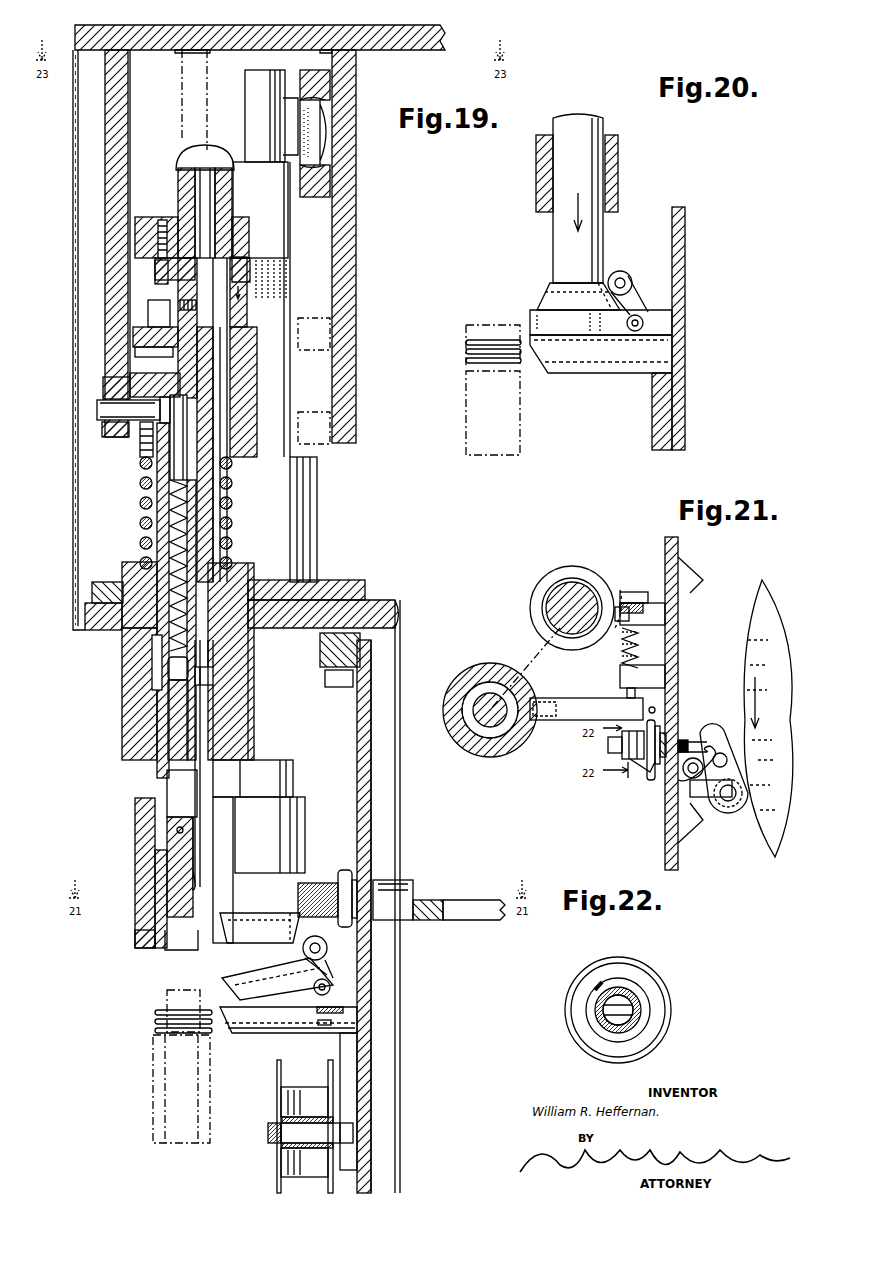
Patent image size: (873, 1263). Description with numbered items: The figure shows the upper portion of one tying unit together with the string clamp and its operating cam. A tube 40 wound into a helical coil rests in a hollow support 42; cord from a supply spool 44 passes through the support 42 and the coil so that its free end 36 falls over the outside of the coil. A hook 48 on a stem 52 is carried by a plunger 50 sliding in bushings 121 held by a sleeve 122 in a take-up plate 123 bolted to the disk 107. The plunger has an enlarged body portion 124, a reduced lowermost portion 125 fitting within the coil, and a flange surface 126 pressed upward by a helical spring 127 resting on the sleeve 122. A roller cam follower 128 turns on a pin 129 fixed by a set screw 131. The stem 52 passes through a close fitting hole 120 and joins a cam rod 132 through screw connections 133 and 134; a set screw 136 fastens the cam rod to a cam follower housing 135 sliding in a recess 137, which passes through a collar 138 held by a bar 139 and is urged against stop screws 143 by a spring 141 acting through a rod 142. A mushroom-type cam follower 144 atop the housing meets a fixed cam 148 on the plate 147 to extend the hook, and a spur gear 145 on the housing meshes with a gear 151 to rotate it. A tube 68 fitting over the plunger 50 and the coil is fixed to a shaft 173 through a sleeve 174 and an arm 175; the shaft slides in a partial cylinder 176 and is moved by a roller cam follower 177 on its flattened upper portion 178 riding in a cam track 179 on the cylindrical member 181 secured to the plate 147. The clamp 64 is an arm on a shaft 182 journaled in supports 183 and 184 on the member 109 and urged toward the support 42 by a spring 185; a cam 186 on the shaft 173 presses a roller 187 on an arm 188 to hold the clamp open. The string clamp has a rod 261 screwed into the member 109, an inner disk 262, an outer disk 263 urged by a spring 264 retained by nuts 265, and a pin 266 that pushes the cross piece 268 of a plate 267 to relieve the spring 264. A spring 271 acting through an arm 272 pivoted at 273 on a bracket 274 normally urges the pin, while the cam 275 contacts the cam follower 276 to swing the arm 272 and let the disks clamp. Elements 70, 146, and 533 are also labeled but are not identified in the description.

In FIG. 19, the free end of the cord 36 is at (220, 1092).
In FIG. 19, the tube formed into helical coil 40 is at (153, 1012).
In FIG. 20, the tube formed into helical coil 40 is at (461, 343).
In FIG. 21, the tube formed into helical coil 40 is at (490, 735).
In FIG. 19, the hollow support 42 is at (252, 1034).
In FIG. 20, the hollow support 42 is at (582, 373).
In FIG. 19, the supply spool 44 is at (278, 1162).
In FIG. 19, the hook 48 is at (165, 945).
In FIG. 19, the hook plunger 50 is at (168, 713).
In FIG. 19, the stem 52 is at (185, 774).
In FIG. 19, the clamp 64 is at (272, 986).
In FIG. 20, the clamp 64 is at (530, 320).
In FIG. 19, the tube 68 is at (135, 932).
In FIG. 21, the tube 68 is at (460, 735).
In FIG. 19, the guide 70 is at (233, 896).
In FIG. 19, the disk 107 is at (393, 595).
In FIG. 19, the member 109 is at (365, 668).
In FIG. 20, the member 109 is at (668, 328).
In FIG. 21, the member 109 is at (665, 822).
In FIG. 19, the close fitting hole 120 is at (188, 843).
In FIG. 19, the bushings 121 is at (152, 688).
In FIG. 19, the sleeve 122 is at (230, 575).
In FIG. 19, the take-up plate 123 is at (345, 580).
In FIG. 19, the body portion 124 is at (268, 320).
In FIG. 19, the lowermost portion 125 is at (175, 905).
In FIG. 21, the lowermost portion 125 is at (498, 700).
In FIG. 19, the flange surface 126 is at (243, 458).
In FIG. 19, the helical spring 127 is at (140, 504).
In FIG. 19, the roller cam follower 128 is at (103, 390).
In FIG. 19, the pin 129 is at (100, 410).
In FIG. 19, the set screw 131 is at (140, 440).
In FIG. 19, the cam rod 132 is at (215, 425).
In FIG. 19, the screw connection 133 is at (213, 668).
In FIG. 19, the screw connection 134 is at (208, 640).
In FIG. 19, the cam follower housing 135 is at (178, 365).
In FIG. 19, the set screw 136 is at (180, 305).
In FIG. 19, the recess 137 is at (213, 395).
In FIG. 19, the collar 138 is at (238, 215).
In FIG. 19, the bar 139 is at (140, 265).
In FIG. 19, the spring 141 is at (168, 528).
In FIG. 19, the rod 142 is at (172, 470).
In FIG. 19, the stop screws 143 is at (168, 207).
In FIG. 19, the mushroom-type cam follower 144 is at (182, 150).
In FIG. 19, the spur gear 145 is at (250, 258).
In FIG. 19, the side wall 146 is at (128, 132).
In FIG. 19, the plate 147 is at (133, 56).
In FIG. 19, the fixed cam 148 is at (182, 97).
In FIG. 19, the gear 151 is at (237, 310).
In FIG. 19, the shaft 173 is at (265, 785).
In FIG. 20, the shaft 173 is at (562, 122).
In FIG. 21, the shaft 173 is at (572, 590).
In FIG. 19, the sleeve 174 is at (283, 812).
In FIG. 20, the sleeve 174 is at (536, 168).
In FIG. 21, the arm 175 is at (515, 650).
In FIG. 19, the partial cylinder 176 is at (317, 505).
In FIG. 19, the roller cam follower 177 is at (322, 133).
In FIG. 19, the flattened upper portion 178 is at (257, 92).
In FIG. 19, the cam track 179 is at (330, 98).
In FIG. 19, the cylindrical member 181 is at (350, 225).
In FIG. 19, the shaft 182 is at (330, 987).
In FIG. 20, the shaft 182 is at (643, 323).
In FIG. 21, the shaft 182 is at (625, 698).
In FIG. 21, the support 183 is at (650, 617).
In FIG. 21, the support 184 is at (650, 680).
In FIG. 21, the spring 185 is at (640, 645).
In FIG. 19, the cam 186 is at (240, 945).
In FIG. 20, the cam 186 is at (545, 288).
In FIG. 21, the cam 186 is at (590, 580).
In FIG. 19, the roller 187 is at (327, 952).
In FIG. 20, the roller 187 is at (624, 270).
In FIG. 21, the roller 187 is at (620, 614).
In FIG. 20, the arm 188 is at (635, 300).
In FIG. 21, the arm 188 is at (640, 592).
In FIG. 21, the rod 261 is at (612, 760).
In FIG. 22, the rod 261 is at (630, 988).
In FIG. 19, the inner disk 262 is at (356, 890).
In FIG. 21, the inner disk 262 is at (658, 766).
In FIG. 19, the outer disk 263 is at (340, 872).
In FIG. 21, the outer disk 263 is at (648, 770).
In FIG. 22, the outer disk 263 is at (648, 1000).
In FIG. 21, the spring 264 is at (640, 720).
In FIG. 22, the spring 264 is at (650, 1012).
In FIG. 21, the nuts 265 is at (608, 742).
In FIG. 21, the pin 266 is at (700, 740).
In FIG. 22, the pin 266 is at (618, 1040).
In FIG. 22, the plate 267 is at (594, 986).
In FIG. 22, the cross piece 268 is at (606, 1012).
In FIG. 21, the spring 271 is at (710, 780).
In FIG. 21, the arm 272 is at (718, 722).
In FIG. 21, the pivot 273 is at (728, 758).
In FIG. 21, the bracket 274 is at (712, 803).
In FIG. 19, the cam 275 is at (488, 920).
In FIG. 21, the cam 275 is at (770, 590).
In FIG. 19, the cam follower 276 is at (425, 920).
In FIG. 21, the cam follower 276 is at (738, 790).
In FIG. 19, the cam follower assembly 533 is at (360, 866).